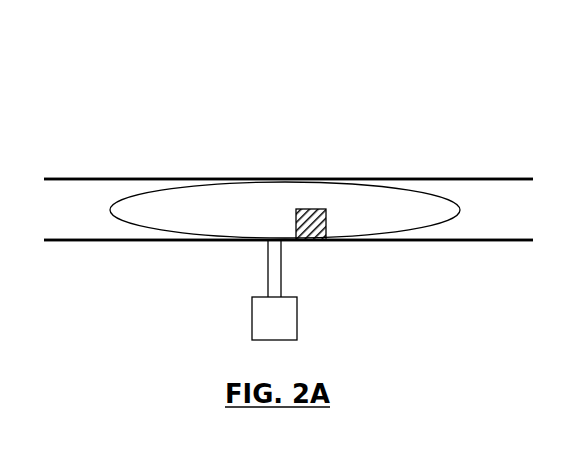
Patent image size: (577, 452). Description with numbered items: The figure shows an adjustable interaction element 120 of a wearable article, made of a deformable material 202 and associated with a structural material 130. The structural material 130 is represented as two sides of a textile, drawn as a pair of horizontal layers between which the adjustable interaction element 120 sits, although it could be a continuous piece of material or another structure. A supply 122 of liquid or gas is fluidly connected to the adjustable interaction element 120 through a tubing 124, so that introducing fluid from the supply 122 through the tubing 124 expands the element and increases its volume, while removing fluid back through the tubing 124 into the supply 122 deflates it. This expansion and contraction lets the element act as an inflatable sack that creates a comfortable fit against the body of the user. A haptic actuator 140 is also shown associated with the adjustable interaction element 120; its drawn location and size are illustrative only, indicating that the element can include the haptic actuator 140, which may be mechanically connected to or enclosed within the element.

The adjustable interaction element 120 is at (157, 143).
The structural material 130 is at (442, 178).
The deformable material 202 is at (460, 210).
The haptic actuator 140 is at (332, 243).
The tubing 124 is at (268, 267).
The supply 122 is at (297, 313).